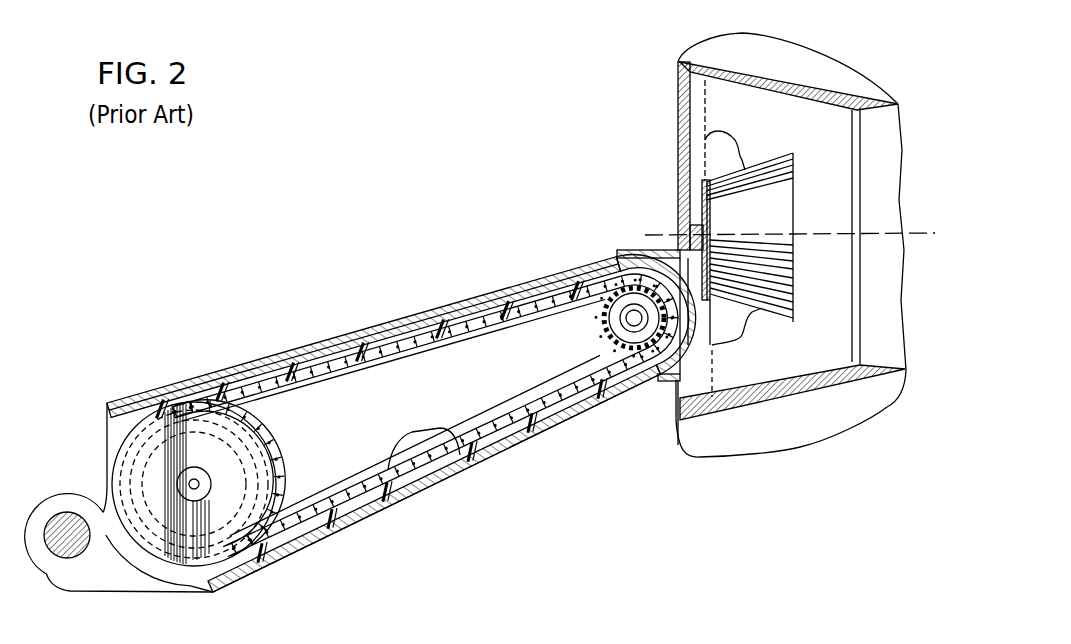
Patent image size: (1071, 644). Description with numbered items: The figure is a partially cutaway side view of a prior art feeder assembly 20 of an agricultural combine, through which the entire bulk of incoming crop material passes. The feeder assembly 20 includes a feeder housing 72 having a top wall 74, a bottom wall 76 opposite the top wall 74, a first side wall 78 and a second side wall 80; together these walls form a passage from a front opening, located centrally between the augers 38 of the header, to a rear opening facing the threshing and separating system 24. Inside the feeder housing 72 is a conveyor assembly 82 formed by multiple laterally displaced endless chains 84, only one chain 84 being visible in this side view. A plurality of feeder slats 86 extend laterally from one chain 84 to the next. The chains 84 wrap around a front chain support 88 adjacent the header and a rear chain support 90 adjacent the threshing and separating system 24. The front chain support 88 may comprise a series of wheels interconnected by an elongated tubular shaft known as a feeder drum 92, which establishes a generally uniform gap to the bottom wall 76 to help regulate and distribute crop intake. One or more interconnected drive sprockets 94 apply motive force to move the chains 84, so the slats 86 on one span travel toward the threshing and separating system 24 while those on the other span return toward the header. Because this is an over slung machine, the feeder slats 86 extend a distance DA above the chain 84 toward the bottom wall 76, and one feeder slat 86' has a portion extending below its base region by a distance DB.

The feeder assembly 20 is at (420, 278).
The threshing and separating system 24 is at (808, 82).
The augers 38 is at (70, 488).
The feeder housing 72 is at (368, 517).
The top wall 74 is at (501, 283).
The bottom wall 76 is at (547, 430).
The first side wall 78 is at (556, 371).
The second side wall 80 is at (433, 458).
The conveyor assembly 82 is at (448, 350).
The endless chain 84 is at (340, 372).
The feeder slat 86 is at (383, 434).
The feeder slat 86' is at (375, 456).
The front chain support 88 is at (262, 469).
The rear chain support 90 is at (667, 374).
The feeder drum 92 is at (262, 465).
The drive sprocket 94 is at (598, 344).
The distance above chain DA is at (465, 425).
The distance below base region DB is at (398, 480).